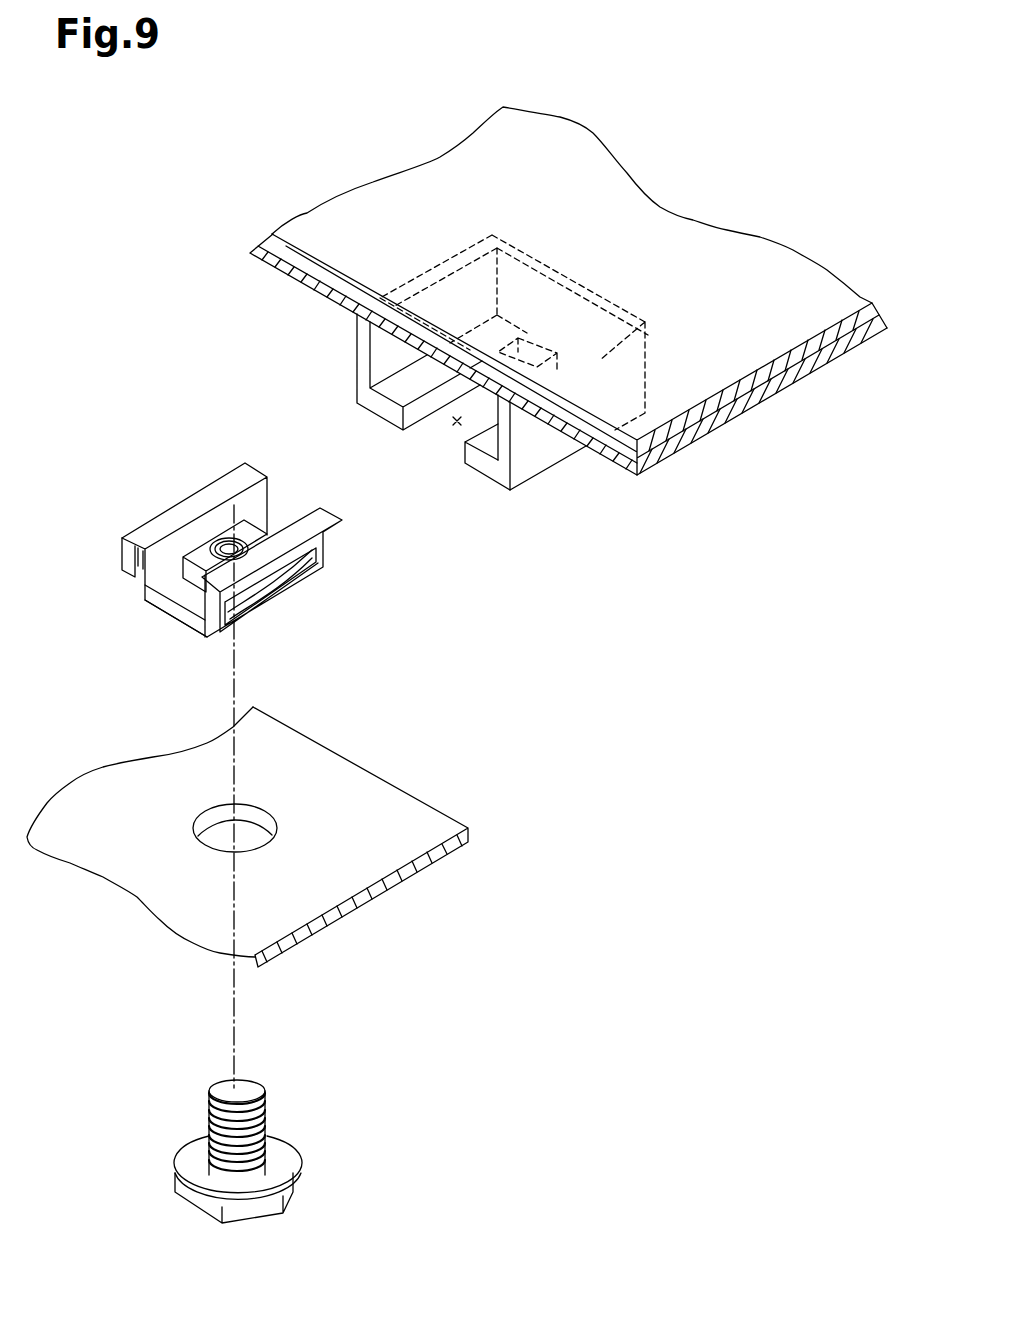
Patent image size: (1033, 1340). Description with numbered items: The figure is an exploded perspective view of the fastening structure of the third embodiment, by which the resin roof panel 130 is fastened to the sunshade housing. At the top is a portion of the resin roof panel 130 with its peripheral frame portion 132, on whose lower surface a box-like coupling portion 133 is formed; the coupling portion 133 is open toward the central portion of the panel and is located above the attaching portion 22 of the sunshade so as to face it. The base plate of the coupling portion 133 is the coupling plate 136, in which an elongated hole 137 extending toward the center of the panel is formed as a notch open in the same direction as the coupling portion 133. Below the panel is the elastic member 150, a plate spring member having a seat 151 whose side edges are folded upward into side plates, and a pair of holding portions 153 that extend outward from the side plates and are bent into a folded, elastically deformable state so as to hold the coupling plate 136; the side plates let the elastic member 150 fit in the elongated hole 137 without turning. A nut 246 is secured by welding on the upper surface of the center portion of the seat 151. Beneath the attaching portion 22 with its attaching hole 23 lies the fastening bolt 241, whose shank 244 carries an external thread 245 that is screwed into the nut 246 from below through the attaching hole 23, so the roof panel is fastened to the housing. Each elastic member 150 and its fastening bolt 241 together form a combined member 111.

The resin roof panel 130 is at (345, 187).
The peripheral frame portion 132 is at (320, 290).
The coupling portion 133 is at (540, 475).
The coupling plate 136 is at (483, 465).
The elongated hole 137 is at (455, 422).
The combined member 111 is at (193, 490).
The nut 246 is at (193, 550).
The elastic member 150 is at (235, 573).
The seat 151 is at (178, 603).
The holding portion 153 is at (123, 578).
The attaching portion 22 is at (262, 840).
The attaching hole 23 is at (253, 837).
The fastening bolt 241 is at (273, 1170).
The shank 244 is at (247, 1092).
The external thread 245 is at (258, 1117).